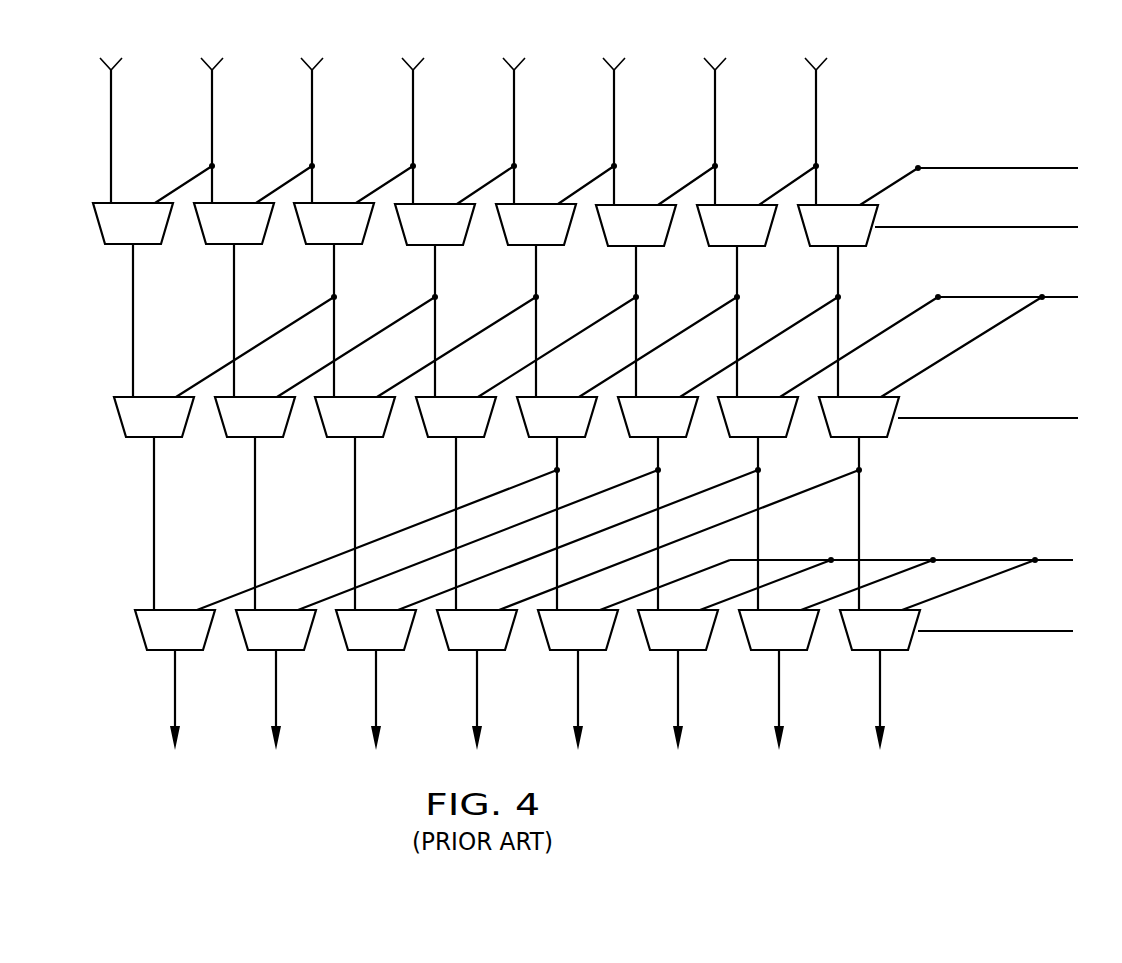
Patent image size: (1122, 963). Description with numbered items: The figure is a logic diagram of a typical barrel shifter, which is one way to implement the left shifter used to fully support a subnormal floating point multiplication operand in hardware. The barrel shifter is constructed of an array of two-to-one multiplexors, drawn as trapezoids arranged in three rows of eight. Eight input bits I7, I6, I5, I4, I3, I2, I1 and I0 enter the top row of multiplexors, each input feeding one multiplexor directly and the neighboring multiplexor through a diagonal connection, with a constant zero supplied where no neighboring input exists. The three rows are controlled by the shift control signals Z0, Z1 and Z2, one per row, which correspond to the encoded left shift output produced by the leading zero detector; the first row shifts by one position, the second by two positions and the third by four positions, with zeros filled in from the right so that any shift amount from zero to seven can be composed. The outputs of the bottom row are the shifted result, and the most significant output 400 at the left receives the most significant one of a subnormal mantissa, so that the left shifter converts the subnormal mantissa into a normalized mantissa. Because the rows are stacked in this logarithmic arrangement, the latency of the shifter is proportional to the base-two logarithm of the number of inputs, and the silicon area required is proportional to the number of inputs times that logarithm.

The most significant output 400 is at (599, 390).
The input bit 7 I7 is at (112, 117).
The input bit 6 I6 is at (213, 117).
The input bit 5 I5 is at (313, 117).
The input bit 4 I4 is at (414, 117).
The input bit 3 I3 is at (515, 117).
The input bit 2 I2 is at (615, 118).
The input bit 1 I1 is at (716, 118).
The input bit 0 I0 is at (817, 118).
The shift control line Z0 is at (990, 233).
The shift control line Z1 is at (1002, 427).
The shift control line Z2 is at (1011, 639).